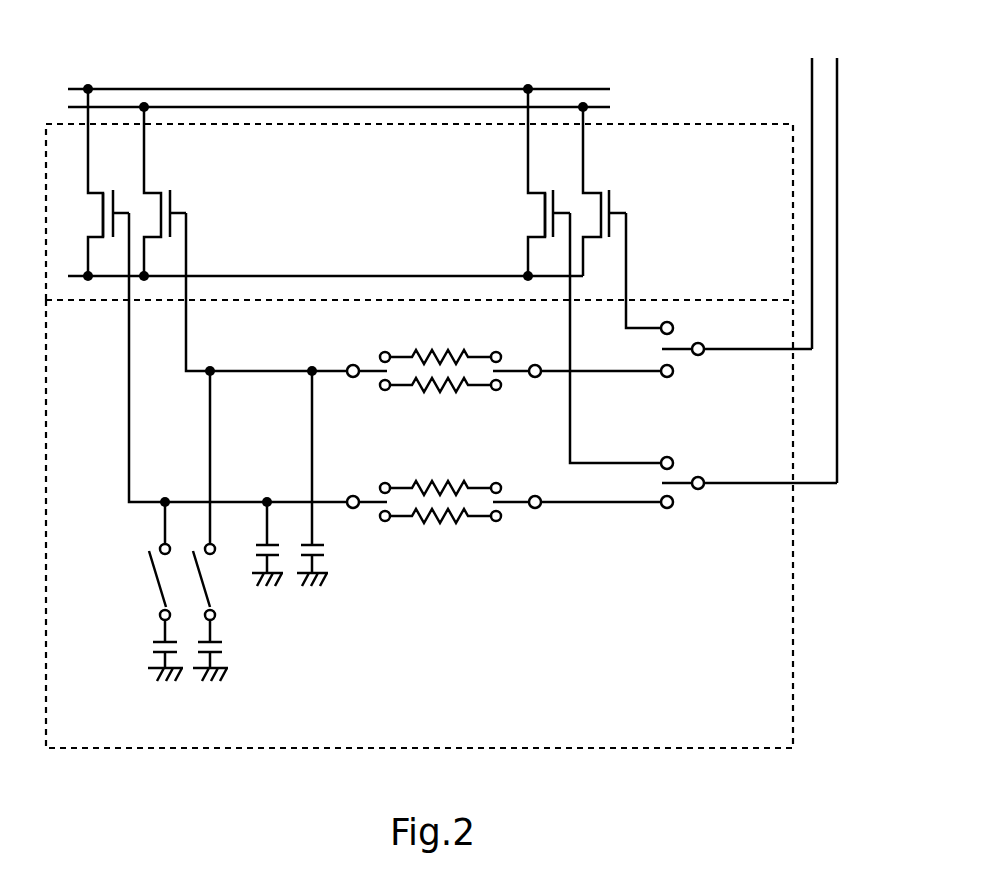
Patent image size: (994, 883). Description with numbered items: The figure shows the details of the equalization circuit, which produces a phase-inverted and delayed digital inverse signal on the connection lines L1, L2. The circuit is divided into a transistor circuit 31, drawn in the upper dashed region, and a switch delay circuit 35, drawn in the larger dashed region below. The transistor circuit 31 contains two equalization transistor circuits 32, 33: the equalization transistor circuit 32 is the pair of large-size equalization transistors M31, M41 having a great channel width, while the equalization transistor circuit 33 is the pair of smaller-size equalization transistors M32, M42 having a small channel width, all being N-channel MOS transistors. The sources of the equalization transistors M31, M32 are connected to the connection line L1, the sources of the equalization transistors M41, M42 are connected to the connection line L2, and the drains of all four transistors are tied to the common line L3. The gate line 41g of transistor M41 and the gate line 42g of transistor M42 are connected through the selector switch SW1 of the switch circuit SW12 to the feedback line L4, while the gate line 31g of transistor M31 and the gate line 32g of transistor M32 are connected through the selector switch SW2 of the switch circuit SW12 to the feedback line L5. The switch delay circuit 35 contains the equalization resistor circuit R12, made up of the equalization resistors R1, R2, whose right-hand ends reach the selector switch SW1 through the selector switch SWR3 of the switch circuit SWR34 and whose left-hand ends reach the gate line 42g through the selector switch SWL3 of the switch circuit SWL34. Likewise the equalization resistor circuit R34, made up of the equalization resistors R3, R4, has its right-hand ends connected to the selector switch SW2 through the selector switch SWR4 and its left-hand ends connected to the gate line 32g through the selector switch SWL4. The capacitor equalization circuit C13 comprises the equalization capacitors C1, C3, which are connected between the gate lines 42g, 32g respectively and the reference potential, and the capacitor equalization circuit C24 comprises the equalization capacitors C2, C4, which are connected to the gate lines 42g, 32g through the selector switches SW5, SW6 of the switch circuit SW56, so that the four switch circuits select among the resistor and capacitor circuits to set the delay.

The connection line L1 is at (430, 88).
The connection line L2 is at (607, 105).
The common line L3 is at (350, 274).
The feedback line L4 is at (812, 83).
The feedback line L5 is at (837, 83).
The transistor circuit 31 is at (650, 122).
The equalization transistor circuit 32 is at (565, 195).
The equalization transistor circuit 33 is at (120, 195).
The switch delay circuit 35 is at (795, 578).
The equalization transistor M31 is at (532, 182).
The equalization transistor M32 is at (94, 182).
The equalization transistor M41 is at (624, 191).
The equalization transistor M42 is at (187, 191).
The gate line 41g is at (626, 265).
The gate line 42g is at (186, 333).
The gate line 32g is at (129, 445).
The gate line 31g is at (570, 417).
The selector switch SW1 is at (684, 320).
The selector switch SW2 is at (684, 454).
The switch circuit SW12 is at (682, 395).
The selector switch SWL3 is at (357, 359).
The selector switch SWR3 is at (577, 359).
The selector switch SWL4 is at (357, 492).
The selector switch SWR4 is at (577, 492).
The switch circuit SWL34 is at (368, 545).
The switch circuit SWR34 is at (577, 540).
The equalization resistor R1 is at (440, 342).
The equalization resistor R2 is at (510, 392).
The equalization resistor R3 is at (440, 475).
The equalization resistor R4 is at (440, 533).
The equalization resistor circuit R12 is at (458, 390).
The equalization resistor circuit R34 is at (440, 535).
The selector switch SW5 is at (219, 495).
The selector switch SW6 is at (144, 561).
The switch circuit SW56 is at (152, 495).
The equalization capacitor C1 is at (326, 478).
The equalization capacitor C2 is at (222, 650).
The equalization capacitor C3 is at (254, 544).
The equalization capacitor C4 is at (153, 650).
The capacitor equalization circuit C13 is at (298, 520).
The capacitor equalization circuit C24 is at (199, 681).